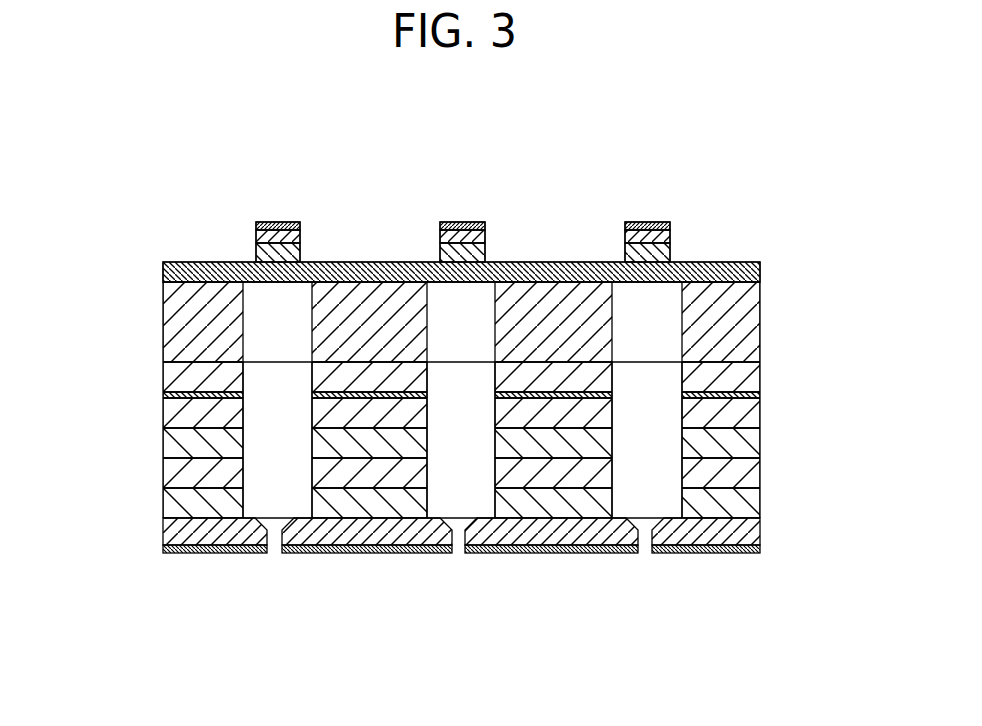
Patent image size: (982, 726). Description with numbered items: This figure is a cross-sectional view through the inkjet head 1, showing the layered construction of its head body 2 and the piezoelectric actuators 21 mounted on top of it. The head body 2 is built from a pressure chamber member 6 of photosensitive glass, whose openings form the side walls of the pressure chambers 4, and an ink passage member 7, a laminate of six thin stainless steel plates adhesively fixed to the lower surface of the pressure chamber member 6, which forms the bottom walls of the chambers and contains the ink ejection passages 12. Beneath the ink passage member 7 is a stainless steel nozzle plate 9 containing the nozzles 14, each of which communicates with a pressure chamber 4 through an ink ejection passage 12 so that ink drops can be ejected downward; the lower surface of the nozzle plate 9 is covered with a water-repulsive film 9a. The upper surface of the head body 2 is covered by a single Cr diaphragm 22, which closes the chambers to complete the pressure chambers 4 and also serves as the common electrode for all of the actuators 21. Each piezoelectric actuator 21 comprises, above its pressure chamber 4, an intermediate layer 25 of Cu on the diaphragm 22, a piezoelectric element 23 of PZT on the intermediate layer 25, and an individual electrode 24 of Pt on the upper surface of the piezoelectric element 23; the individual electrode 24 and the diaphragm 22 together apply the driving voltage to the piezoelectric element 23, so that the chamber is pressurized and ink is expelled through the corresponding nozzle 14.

The inkjet head 1 is at (157, 112).
The head body 2 is at (120, 398).
The pressure chamber 4 is at (289, 340).
The pressure chamber member 6 is at (760, 318).
The ink passage member 7 is at (770, 362).
The nozzle plate 9 is at (760, 535).
The water-repulsive film 9a is at (760, 549).
The ink ejection passage 12 is at (288, 443).
The nozzle 14 is at (280, 568).
The piezoelectric actuator 21 is at (461, 176).
The diaphragm 22 is at (760, 265).
The piezoelectric element 23 is at (300, 236).
The individual electrode 24 is at (292, 222).
The intermediate layer 25 is at (300, 252).